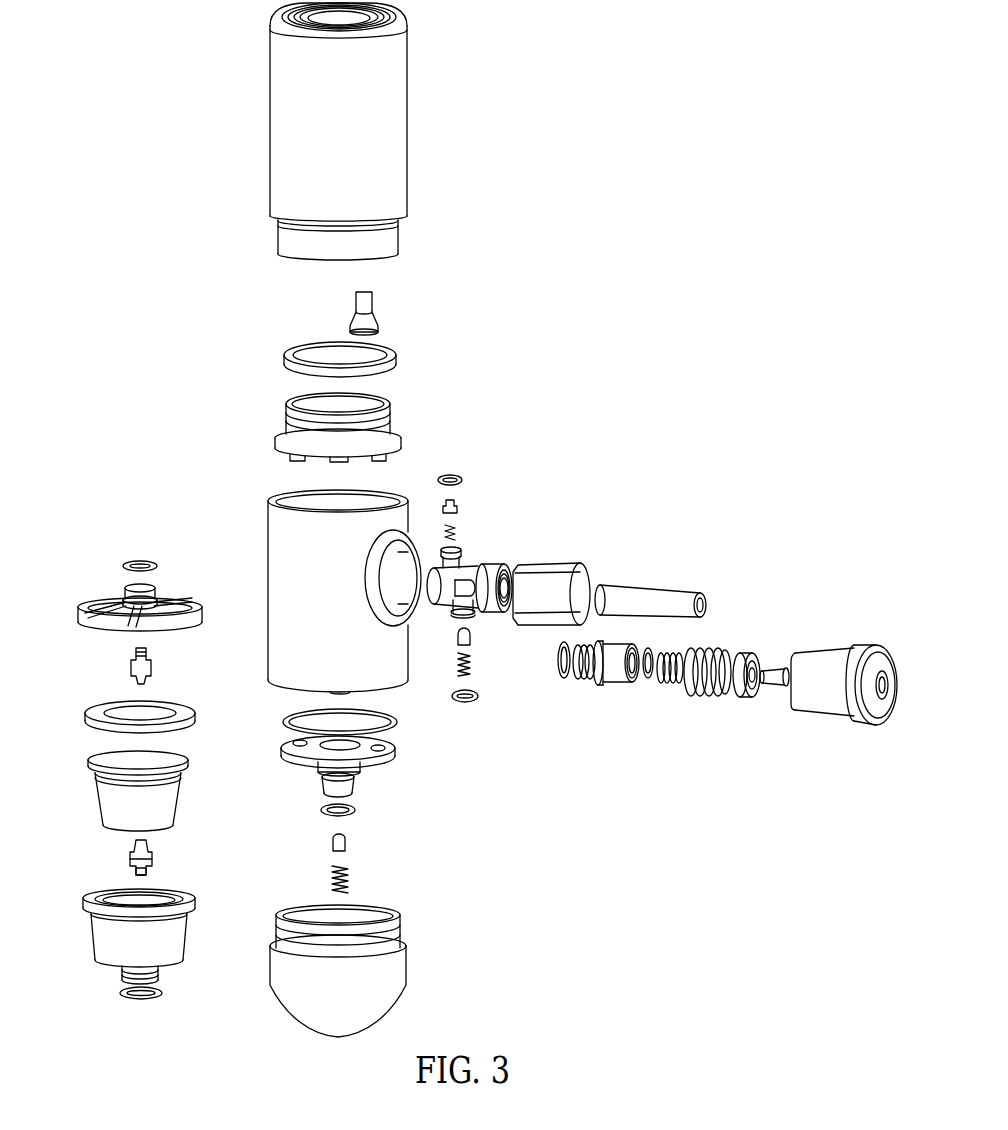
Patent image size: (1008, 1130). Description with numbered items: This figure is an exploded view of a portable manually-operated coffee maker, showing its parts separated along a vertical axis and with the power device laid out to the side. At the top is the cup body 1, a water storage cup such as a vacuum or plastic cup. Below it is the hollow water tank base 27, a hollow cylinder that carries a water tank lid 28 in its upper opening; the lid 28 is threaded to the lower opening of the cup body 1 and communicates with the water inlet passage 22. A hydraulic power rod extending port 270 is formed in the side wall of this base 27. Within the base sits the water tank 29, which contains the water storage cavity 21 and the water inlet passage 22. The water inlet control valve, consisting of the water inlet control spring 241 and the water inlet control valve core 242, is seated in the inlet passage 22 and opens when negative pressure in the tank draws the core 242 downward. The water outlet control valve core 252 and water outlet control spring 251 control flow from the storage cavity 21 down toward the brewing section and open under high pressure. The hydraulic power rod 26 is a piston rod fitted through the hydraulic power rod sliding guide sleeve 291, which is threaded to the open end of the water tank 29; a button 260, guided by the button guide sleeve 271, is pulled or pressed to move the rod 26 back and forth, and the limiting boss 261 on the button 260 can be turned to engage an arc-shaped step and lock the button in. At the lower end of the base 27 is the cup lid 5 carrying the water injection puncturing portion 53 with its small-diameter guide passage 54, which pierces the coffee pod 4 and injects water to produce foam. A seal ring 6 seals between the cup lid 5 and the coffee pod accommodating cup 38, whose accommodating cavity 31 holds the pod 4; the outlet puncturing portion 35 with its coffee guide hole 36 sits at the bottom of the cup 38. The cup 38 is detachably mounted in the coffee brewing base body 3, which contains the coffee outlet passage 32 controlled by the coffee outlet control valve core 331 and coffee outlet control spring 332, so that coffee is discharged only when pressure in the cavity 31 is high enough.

The cup body 1 is at (415, 131).
The water tank lid 28 is at (286, 421).
The hydraulic power rod extending port 270 is at (283, 546).
The housing 27 is at (283, 580).
The water inlet control valve core 242 is at (483, 486).
The water inlet control spring 241 is at (486, 513).
The water inlet passage 22 is at (471, 562).
The water tank 29 is at (512, 561).
The water storage cavity 21 is at (551, 567).
The button guide sleeve 271 is at (586, 547).
The hydraulic power rod 26 is at (650, 569).
The water outlet control valve core 252 is at (499, 648).
The water outlet control spring 251 is at (499, 671).
The hydraulic power rod sliding guide sleeve 291 is at (673, 693).
The limiting boss 261 is at (821, 631).
The button 260 is at (844, 680).
The cup lid 5 is at (127, 584).
The water injection puncturing portion 53 is at (101, 660).
The guide passage 54 is at (186, 667).
The seal ring 6 is at (126, 707).
The coffee pod 4 is at (122, 791).
The outlet puncturing portion 35 is at (177, 845).
The coffee guide hole 36 is at (143, 845).
The accommodating cavity 31 is at (127, 928).
The coffee pod accommodating cup 38 is at (111, 977).
The coffee outlet passage 32 is at (406, 766).
The coffee outlet control valve core 331 is at (438, 827).
The coffee outlet control spring 332 is at (438, 873).
The coffee brewing base body 3 is at (396, 971).